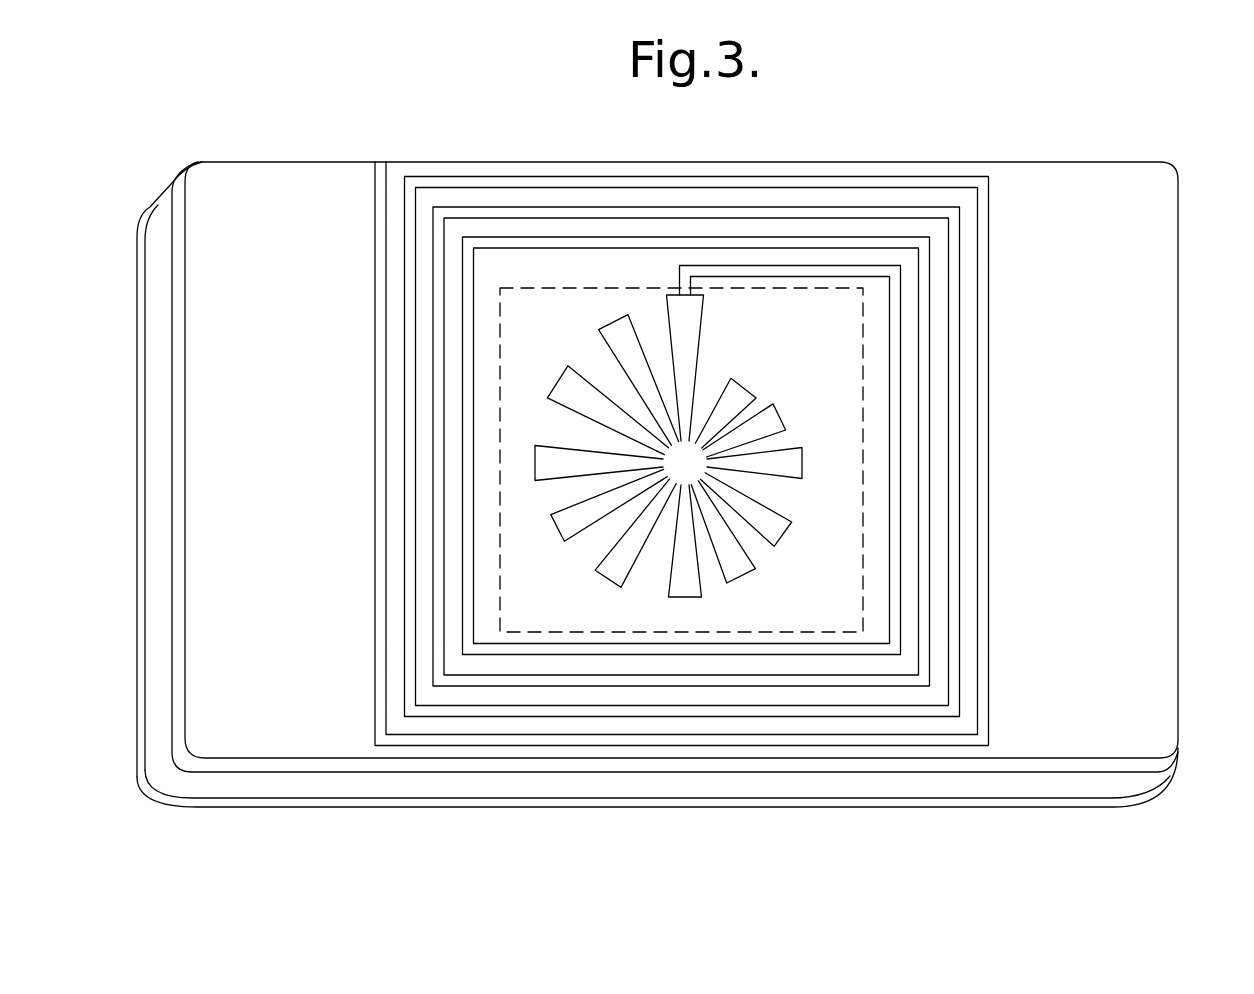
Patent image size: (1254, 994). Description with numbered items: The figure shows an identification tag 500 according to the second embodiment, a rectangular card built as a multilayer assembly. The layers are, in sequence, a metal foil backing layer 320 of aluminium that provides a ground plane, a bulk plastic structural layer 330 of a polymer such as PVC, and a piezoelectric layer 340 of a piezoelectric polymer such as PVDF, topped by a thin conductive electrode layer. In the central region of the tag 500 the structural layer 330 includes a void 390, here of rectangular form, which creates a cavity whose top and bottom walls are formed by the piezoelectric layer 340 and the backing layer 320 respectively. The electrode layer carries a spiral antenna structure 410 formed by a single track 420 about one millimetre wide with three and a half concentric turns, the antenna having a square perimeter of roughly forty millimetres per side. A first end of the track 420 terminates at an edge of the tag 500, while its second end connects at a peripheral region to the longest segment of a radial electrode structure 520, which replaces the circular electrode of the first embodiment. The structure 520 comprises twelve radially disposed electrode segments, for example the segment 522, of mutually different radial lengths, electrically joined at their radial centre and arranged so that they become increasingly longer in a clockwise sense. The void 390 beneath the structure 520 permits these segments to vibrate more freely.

The identification tag 500 is at (692, 480).
The piezoelectric layer 340 is at (1147, 768).
The bulk plastic structural layer 330 is at (1095, 782).
The metal foil backing layer 320 is at (978, 803).
The spiral antenna structure 410 is at (657, 489).
The track 420 is at (455, 207).
The void 390 is at (530, 634).
The radial electrode structure 520 is at (672, 489).
The electrode segment 522 is at (687, 597).